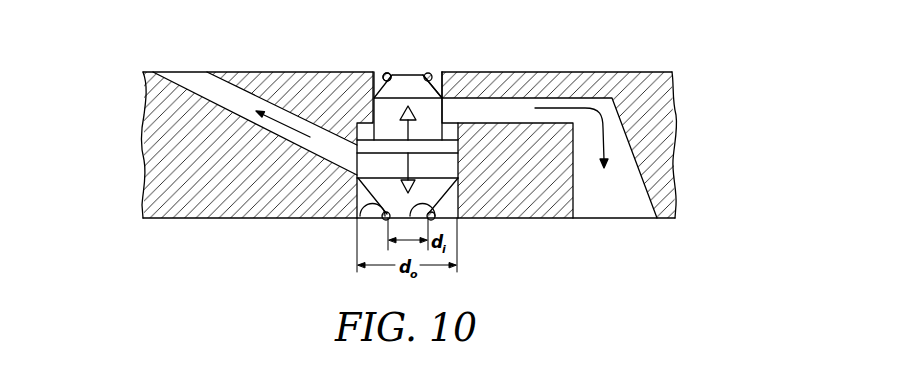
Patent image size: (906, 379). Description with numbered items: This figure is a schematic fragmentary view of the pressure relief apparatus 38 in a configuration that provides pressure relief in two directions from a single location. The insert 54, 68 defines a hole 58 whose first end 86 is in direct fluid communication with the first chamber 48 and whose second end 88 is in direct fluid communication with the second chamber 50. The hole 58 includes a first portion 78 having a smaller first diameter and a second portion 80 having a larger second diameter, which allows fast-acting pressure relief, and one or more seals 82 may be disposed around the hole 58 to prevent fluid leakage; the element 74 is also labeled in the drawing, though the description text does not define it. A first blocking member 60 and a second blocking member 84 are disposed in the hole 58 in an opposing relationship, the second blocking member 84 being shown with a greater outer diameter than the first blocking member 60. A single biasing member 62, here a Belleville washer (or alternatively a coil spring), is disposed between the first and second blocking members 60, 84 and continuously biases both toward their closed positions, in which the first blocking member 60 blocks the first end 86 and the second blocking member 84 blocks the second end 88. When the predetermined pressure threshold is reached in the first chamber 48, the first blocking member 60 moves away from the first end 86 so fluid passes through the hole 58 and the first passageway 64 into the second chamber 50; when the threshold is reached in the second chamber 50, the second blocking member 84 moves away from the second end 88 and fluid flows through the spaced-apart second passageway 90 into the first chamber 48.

The pressure relief apparatus 38 is at (690, 91).
The first chamber 48 is at (222, 65).
The second chamber 50 is at (222, 250).
The insert 54 is at (356, 149).
The insert 68 is at (160, 187).
The second passageway 90 is at (182, 92).
The biasing member 62 is at (357, 146).
The valve seat wall 74 is at (408, 138).
The first blocking member 60 is at (400, 92).
The first end 86 is at (440, 74).
The hole 58 is at (497, 142).
The first portion 78 is at (410, 72).
The second portion 80 is at (455, 130).
The seal 82 is at (389, 77).
The second blocking member 84 is at (440, 163).
The second end 88 is at (363, 180).
The first passageway 64 is at (630, 190).